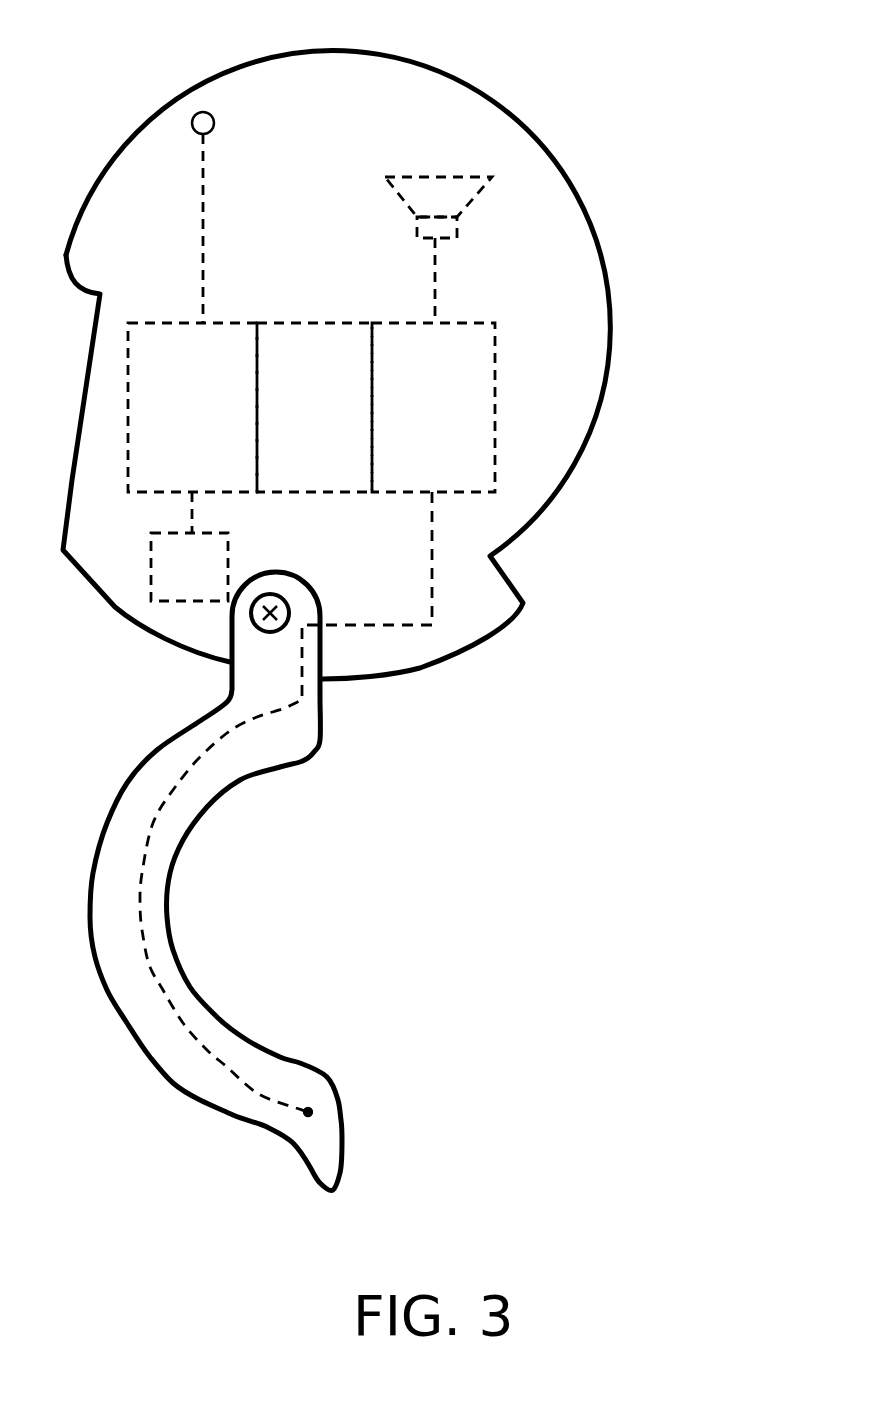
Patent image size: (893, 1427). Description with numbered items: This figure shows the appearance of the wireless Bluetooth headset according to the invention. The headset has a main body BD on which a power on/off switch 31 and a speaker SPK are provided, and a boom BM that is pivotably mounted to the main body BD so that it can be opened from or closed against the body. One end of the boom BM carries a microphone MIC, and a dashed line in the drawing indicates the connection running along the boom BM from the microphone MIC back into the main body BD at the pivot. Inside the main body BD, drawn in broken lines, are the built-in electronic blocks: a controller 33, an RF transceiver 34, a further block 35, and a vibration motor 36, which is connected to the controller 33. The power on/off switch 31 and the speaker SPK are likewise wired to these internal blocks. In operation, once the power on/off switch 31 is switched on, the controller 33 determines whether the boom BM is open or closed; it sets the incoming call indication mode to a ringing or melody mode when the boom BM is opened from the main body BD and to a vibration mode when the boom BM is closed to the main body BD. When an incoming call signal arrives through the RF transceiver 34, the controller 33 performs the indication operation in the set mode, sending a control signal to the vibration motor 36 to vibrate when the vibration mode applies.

The main body BD is at (599, 229).
The boom BM is at (172, 953).
The microphone MIC is at (312, 1111).
The speaker SPK is at (447, 180).
The power on/off switch 31 is at (203, 111).
The controller 33 is at (192, 407).
The RF transceiver 34 is at (314, 407).
The wireless communication unit 35 is at (433, 407).
The vibration motor 36 is at (189, 546).